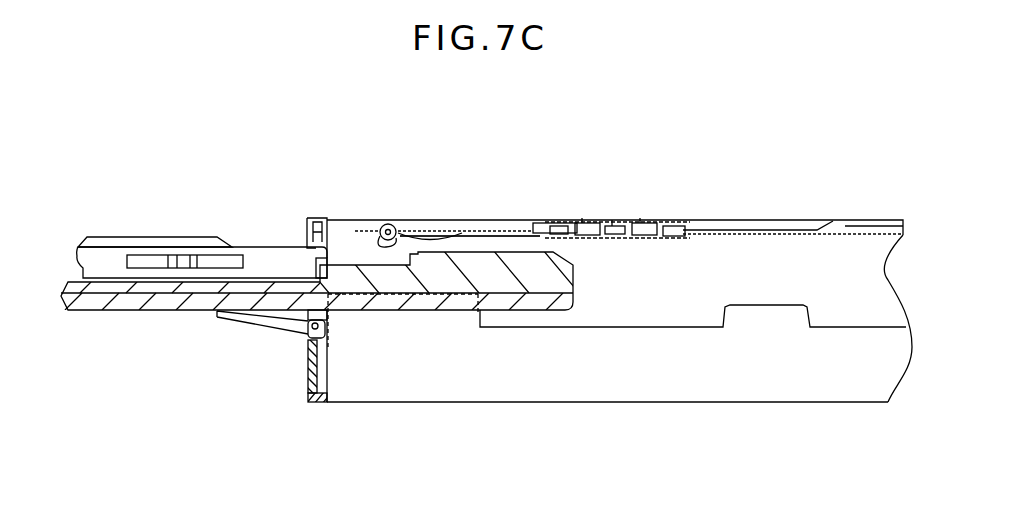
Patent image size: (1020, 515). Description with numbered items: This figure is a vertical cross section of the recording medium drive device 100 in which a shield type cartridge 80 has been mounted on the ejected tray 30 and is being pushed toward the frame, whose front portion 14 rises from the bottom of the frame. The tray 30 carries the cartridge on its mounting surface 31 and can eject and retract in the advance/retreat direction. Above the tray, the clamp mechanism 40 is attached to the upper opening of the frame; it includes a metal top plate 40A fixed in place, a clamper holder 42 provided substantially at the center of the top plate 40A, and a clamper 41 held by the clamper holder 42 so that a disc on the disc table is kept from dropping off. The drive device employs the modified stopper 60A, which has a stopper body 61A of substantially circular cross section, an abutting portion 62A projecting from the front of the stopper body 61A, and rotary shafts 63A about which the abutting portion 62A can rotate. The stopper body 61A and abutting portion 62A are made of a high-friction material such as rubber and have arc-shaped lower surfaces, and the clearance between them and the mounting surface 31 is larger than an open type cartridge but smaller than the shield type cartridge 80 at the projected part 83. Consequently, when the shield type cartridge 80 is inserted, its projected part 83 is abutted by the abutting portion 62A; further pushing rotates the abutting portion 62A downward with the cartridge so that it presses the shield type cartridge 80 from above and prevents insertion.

The front portion 14 is at (306, 398).
The tray 30 is at (71, 322).
The mounting surface 31 is at (203, 311).
The clamp mechanism 40 is at (669, 190).
The top plate 40A is at (517, 230).
The clamper 41 is at (619, 221).
The clamper holder 42 is at (723, 232).
The stopper 60A is at (386, 224).
The stopper body 61A is at (399, 225).
The abutting portion 62A is at (370, 235).
The rotary shafts 63A is at (463, 233).
The shield type cartridge 80 is at (263, 246).
The projected part 83 is at (176, 236).
The recording medium drive device 100 is at (798, 412).